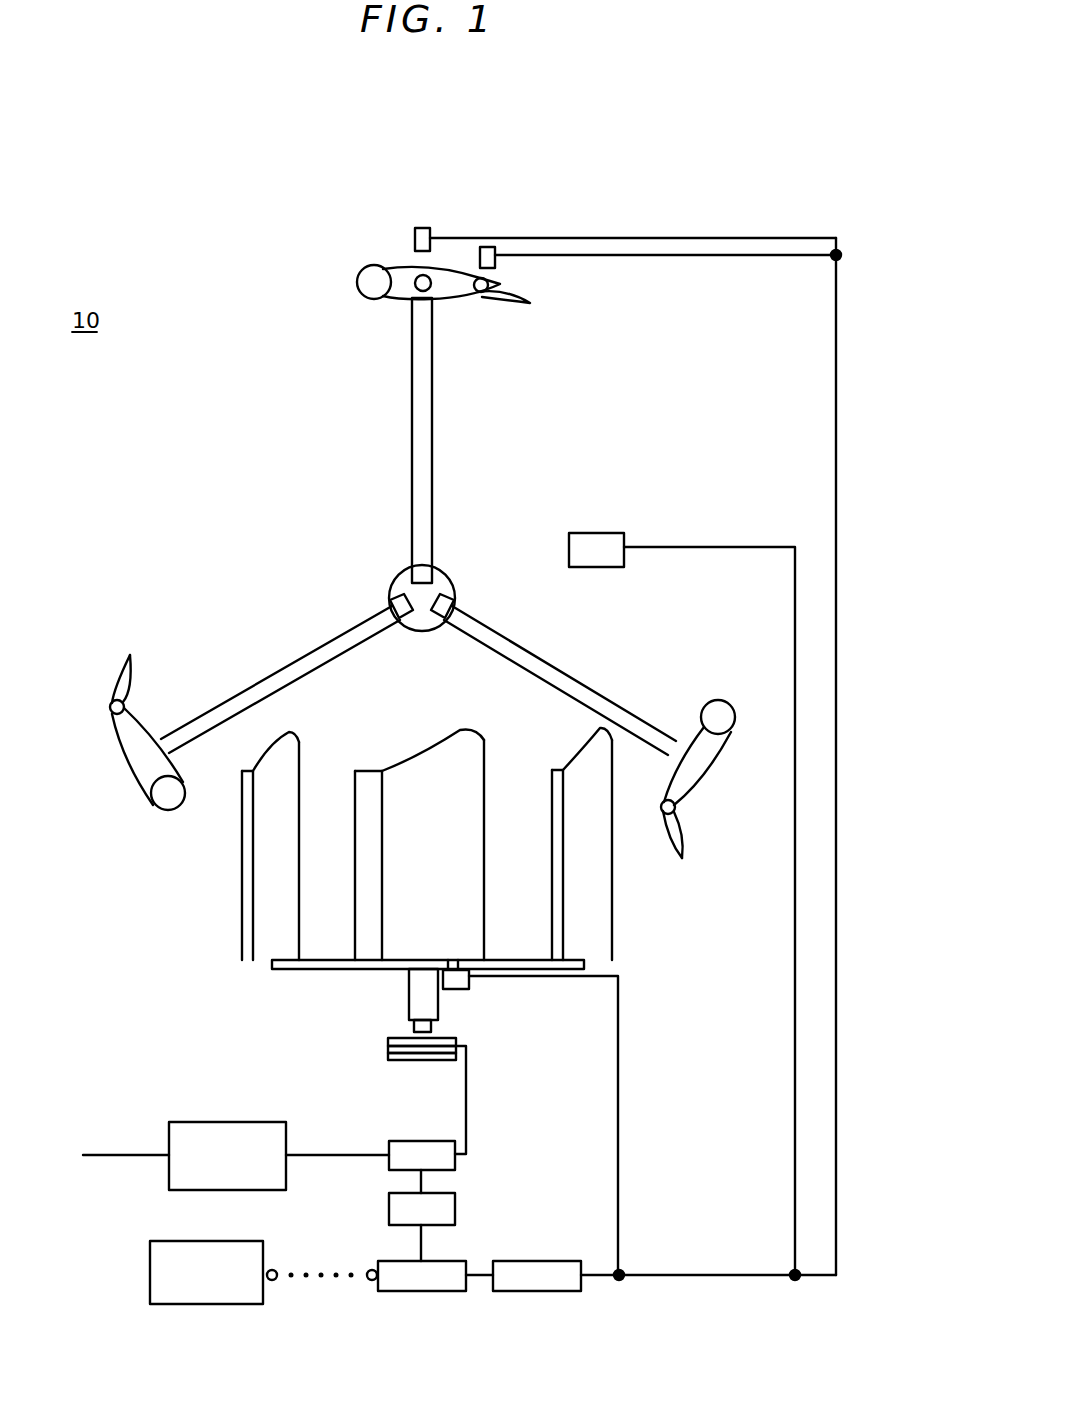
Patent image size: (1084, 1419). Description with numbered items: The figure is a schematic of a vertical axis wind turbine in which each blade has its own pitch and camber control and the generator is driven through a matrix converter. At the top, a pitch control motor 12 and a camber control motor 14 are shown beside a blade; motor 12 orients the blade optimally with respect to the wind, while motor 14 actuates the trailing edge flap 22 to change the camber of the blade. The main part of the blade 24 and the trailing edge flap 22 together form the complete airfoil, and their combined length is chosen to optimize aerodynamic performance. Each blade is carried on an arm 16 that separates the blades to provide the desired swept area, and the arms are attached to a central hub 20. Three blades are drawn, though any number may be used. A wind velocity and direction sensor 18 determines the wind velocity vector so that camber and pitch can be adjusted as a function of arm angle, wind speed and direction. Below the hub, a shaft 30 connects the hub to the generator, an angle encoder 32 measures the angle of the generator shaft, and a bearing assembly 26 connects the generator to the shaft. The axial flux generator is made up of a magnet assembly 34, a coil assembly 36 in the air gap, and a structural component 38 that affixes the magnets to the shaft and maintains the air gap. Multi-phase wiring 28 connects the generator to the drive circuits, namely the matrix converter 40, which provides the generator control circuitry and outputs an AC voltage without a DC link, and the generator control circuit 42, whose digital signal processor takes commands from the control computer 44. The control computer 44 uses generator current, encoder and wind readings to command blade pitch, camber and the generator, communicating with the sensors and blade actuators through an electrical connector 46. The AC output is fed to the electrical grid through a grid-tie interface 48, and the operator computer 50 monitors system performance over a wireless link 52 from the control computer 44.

The pitch control motor 12 is at (418, 232).
The camber control motor 14 is at (497, 258).
The arm 16 is at (430, 420).
The wind velocity and direction sensor 18 is at (598, 533).
The central hub 20 is at (402, 582).
The trailing edge flap 22 is at (124, 674).
The main part of the blade 24 is at (128, 772).
The bearing assembly 26 is at (414, 1028).
The multi-phase wiring 28 is at (468, 1104).
The shaft 30 is at (409, 1011).
The angle encoder 32 is at (470, 988).
The magnet assembly 34 is at (458, 1043).
The coil assembly 36 is at (388, 1050).
The structural component 38 is at (412, 1061).
The matrix converter 40 is at (457, 1161).
The generator control circuit 42 is at (457, 1216).
The control computer 44 is at (424, 1292).
The electrical connector 46 is at (545, 1292).
The grid-tie interface 48 is at (169, 1166).
The operator computer 50 is at (150, 1268).
The wireless link 52 is at (321, 1282).